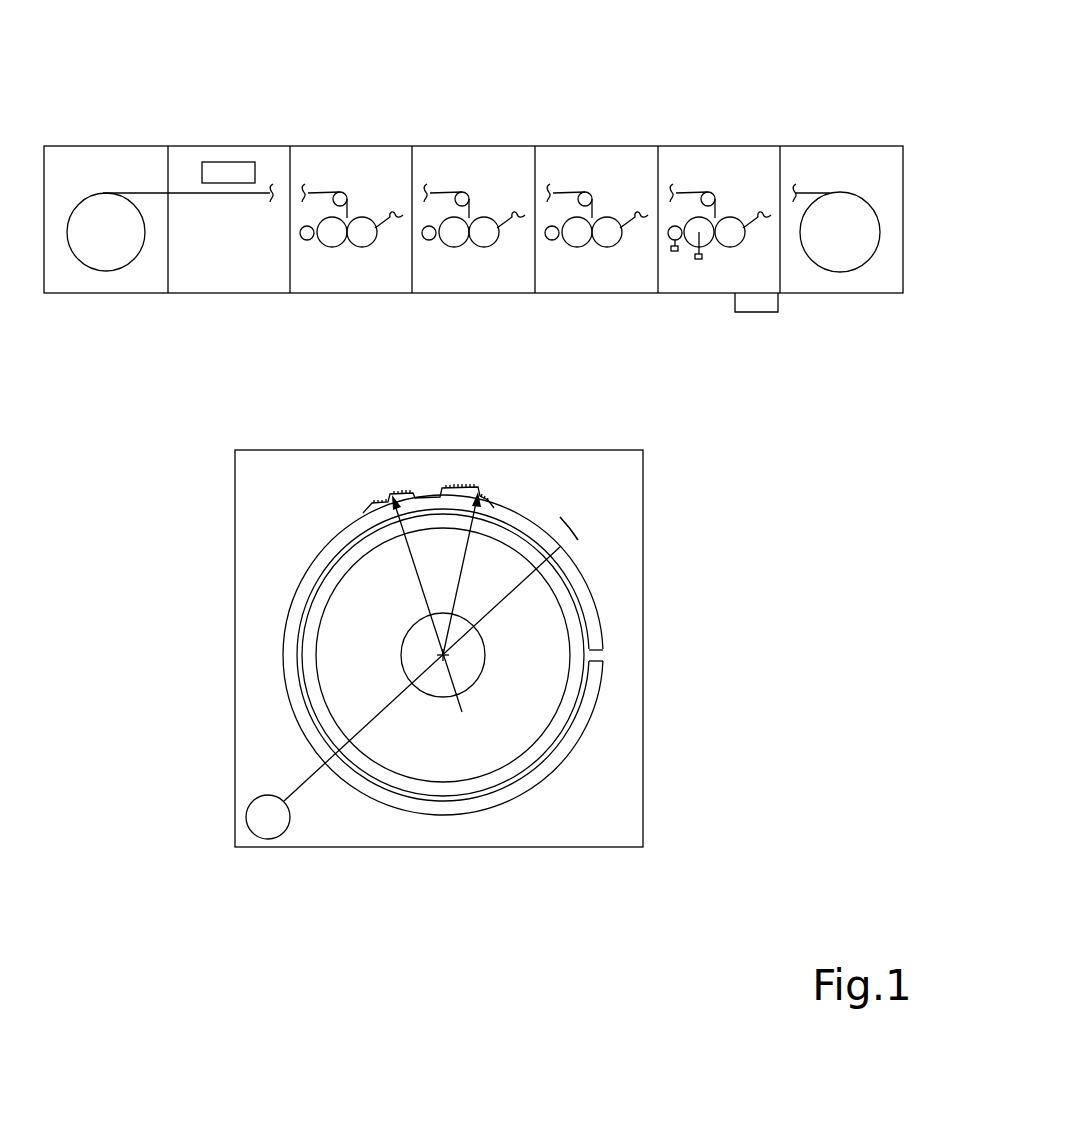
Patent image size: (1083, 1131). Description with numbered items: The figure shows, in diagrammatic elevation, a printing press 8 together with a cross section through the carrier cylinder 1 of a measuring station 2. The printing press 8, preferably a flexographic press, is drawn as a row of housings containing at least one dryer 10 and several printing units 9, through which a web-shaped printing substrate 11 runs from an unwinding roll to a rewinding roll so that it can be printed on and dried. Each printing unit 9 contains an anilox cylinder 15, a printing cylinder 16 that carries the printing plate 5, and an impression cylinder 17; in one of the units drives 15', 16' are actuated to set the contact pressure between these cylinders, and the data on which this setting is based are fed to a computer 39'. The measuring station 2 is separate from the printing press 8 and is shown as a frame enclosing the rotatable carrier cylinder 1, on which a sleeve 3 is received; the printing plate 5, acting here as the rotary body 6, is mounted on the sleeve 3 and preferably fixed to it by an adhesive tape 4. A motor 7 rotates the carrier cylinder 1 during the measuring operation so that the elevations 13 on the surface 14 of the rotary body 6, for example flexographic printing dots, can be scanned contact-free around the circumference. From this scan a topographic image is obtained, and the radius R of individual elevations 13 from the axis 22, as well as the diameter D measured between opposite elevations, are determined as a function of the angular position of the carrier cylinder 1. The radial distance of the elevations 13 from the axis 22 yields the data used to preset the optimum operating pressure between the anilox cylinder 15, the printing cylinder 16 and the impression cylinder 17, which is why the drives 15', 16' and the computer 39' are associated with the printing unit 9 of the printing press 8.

The carrier cylinder 1 is at (438, 753).
The measuring station 2 is at (540, 848).
The sleeve 3 is at (388, 772).
The adhesive tape 4 is at (458, 787).
The printing plate 5 is at (594, 598).
The rotary body 6 is at (443, 655).
The motor 7 is at (246, 822).
The printing press 8 is at (855, 85).
The printing unit 9 is at (509, 241).
The dryer 10 is at (230, 172).
The printing substrate 11 is at (150, 193).
The elevations 13 is at (455, 488).
The surface 14 is at (537, 523).
The anilox cylinder 15 is at (280, 310).
The printing cylinder 16 is at (326, 292).
The impression cylinder 17 is at (362, 248).
The drive 15' is at (652, 285).
The drive 16' is at (718, 294).
The axis 22 is at (475, 632).
The computer 39' is at (781, 357).
The radius R is at (470, 552).
The diameter D is at (420, 592).